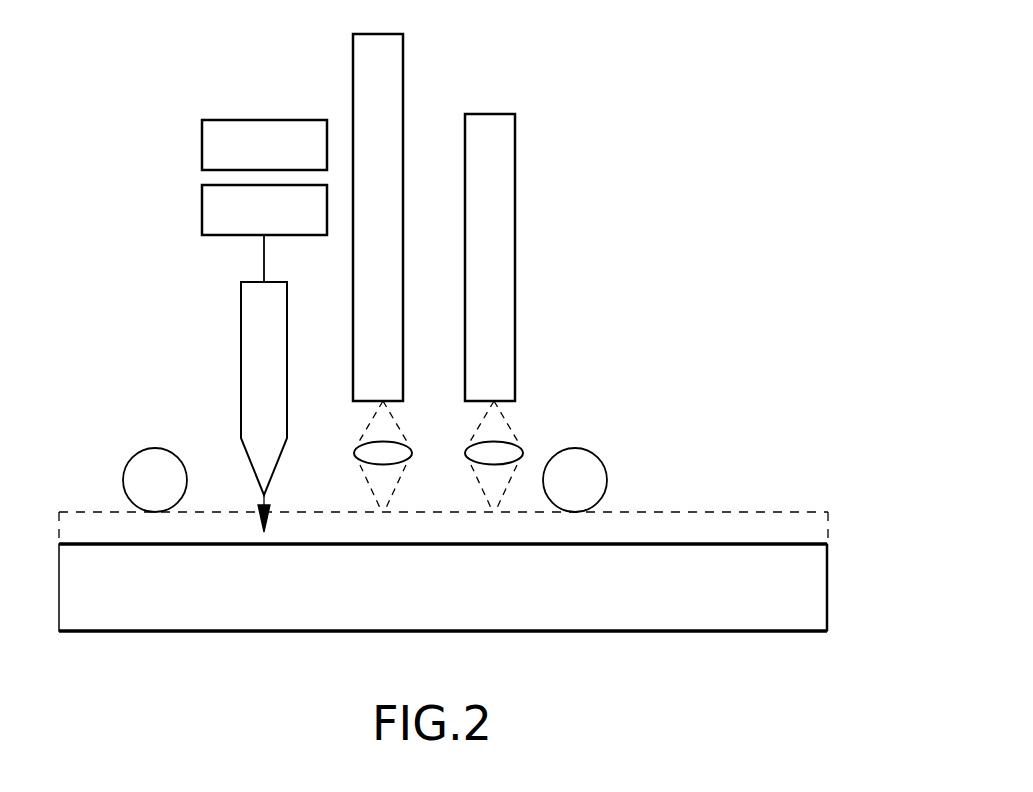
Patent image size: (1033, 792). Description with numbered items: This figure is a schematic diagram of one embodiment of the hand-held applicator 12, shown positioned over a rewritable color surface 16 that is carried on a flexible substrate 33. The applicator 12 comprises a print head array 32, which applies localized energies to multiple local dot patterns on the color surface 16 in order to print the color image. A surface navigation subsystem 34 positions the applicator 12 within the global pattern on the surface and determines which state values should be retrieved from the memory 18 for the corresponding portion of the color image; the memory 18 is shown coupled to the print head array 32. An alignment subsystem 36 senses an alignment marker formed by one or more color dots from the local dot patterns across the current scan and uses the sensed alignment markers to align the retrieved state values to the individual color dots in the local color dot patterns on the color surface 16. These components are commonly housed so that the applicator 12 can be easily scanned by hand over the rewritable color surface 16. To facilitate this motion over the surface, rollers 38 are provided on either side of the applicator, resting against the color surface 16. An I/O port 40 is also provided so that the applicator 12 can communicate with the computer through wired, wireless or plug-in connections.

The applicator 12 is at (787, 126).
The color surface 16 is at (741, 515).
The memory 18 is at (202, 200).
The print head array 32 is at (241, 320).
The flexible substrate 33 is at (828, 585).
The surface navigation subsystem 34 is at (515, 228).
The alignment subsystem 36 is at (403, 77).
The rollers 38 is at (133, 459).
The I/O port 40 is at (202, 133).